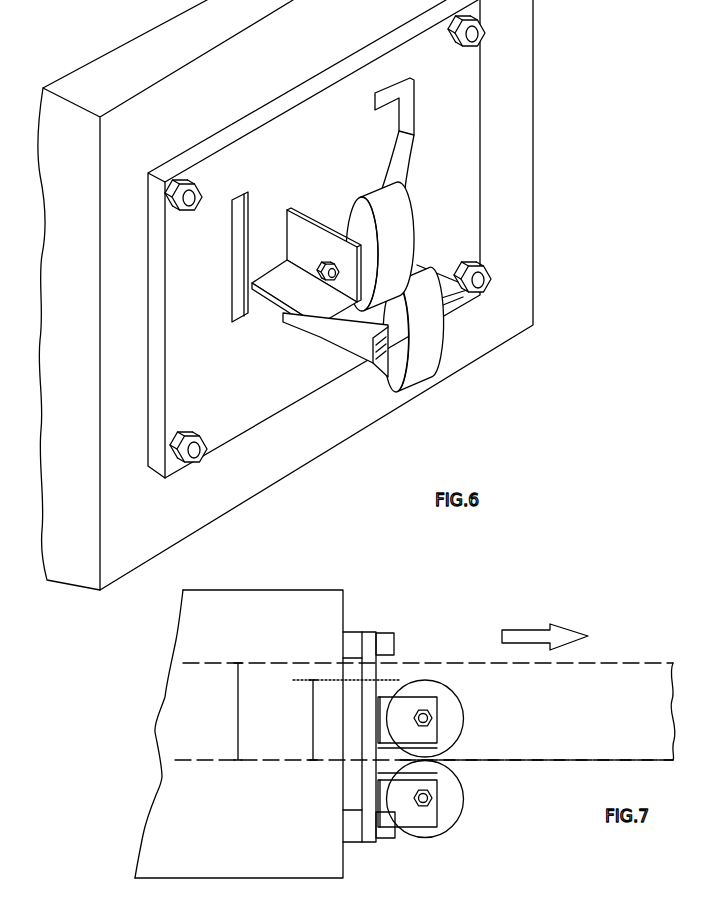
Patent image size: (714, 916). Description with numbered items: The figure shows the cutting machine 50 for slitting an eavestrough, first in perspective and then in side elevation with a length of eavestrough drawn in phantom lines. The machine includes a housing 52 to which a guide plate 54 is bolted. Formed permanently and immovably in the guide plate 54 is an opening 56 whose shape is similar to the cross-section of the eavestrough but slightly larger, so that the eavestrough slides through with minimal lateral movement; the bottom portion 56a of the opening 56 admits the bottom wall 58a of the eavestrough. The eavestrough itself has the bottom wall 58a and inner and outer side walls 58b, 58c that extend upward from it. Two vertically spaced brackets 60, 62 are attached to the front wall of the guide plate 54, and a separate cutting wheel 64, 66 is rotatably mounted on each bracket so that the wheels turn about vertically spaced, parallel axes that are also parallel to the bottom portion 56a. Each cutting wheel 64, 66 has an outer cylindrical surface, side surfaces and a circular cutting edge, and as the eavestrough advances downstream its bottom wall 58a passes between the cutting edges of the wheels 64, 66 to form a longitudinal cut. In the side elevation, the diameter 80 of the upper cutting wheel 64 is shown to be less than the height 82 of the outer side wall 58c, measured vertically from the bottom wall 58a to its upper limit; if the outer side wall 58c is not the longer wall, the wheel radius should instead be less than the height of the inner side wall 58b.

In FIG. 6, the cutting machine 50 is at (566, 222).
In FIG. 6, the housing 52 is at (518, 88).
In FIG. 6, the guide plate 54 is at (463, 173).
In FIG. 6, the opening 56 is at (410, 116).
In FIG. 6, the bottom portion of the opening 56a is at (258, 318).
In FIG. 7, the bottom wall 58a is at (218, 763).
In FIG. 7, the inner side wall 58b is at (536, 781).
In FIG. 7, the outer side wall 58c is at (212, 663).
In FIG. 6, the bracket 60 is at (302, 210).
In FIG. 6, the bracket 62 is at (318, 338).
In FIG. 6, the cutting wheel 64 is at (380, 190).
In FIG. 7, the cutting wheel 64 is at (463, 723).
In FIG. 6, the cutting wheel 66 is at (425, 380).
In FIG. 7, the cutting wheel 66 is at (463, 810).
In FIG. 7, the diameter 80 is at (346, 720).
In FIG. 7, the height 82 is at (235, 711).